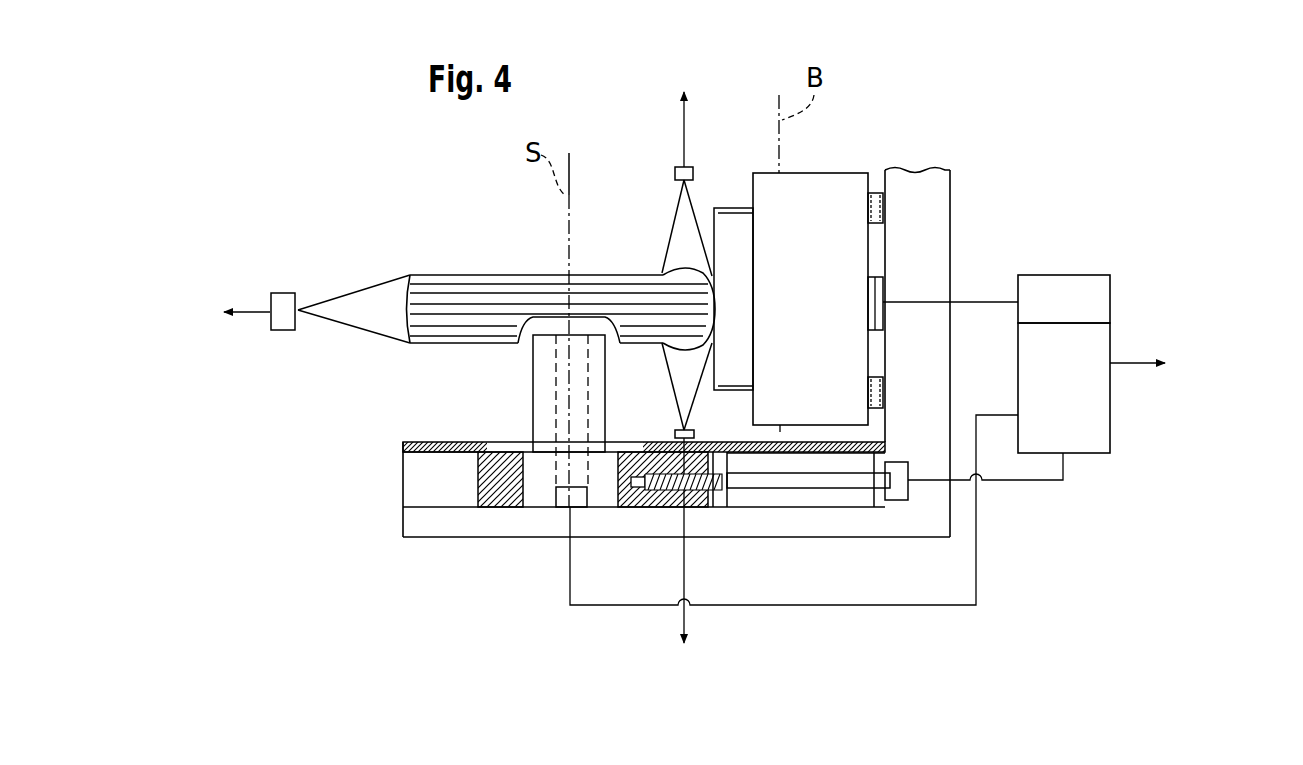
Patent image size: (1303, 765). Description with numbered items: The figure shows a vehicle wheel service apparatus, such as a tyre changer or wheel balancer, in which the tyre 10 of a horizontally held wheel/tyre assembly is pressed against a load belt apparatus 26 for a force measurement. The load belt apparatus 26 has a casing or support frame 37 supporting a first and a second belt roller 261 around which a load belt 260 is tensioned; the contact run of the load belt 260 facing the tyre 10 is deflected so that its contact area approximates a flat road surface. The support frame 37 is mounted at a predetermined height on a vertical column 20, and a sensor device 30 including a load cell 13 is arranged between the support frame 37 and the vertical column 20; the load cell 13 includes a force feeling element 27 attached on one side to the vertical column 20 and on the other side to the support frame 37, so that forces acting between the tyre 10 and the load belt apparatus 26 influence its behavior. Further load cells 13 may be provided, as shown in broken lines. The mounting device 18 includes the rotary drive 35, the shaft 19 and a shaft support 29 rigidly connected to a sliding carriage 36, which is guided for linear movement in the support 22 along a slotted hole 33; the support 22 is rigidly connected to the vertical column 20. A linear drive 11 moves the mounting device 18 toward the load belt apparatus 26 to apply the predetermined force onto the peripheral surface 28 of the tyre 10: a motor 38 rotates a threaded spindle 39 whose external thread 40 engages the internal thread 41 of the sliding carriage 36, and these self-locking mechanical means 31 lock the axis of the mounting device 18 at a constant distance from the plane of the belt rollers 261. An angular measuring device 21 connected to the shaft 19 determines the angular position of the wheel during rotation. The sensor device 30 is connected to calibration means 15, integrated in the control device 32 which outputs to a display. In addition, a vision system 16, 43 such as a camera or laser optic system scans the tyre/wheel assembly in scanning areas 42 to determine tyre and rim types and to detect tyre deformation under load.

The tyre 10 is at (445, 275).
The linear drive 11 is at (770, 504).
The load cell 13 is at (943, 261).
The sensor device 30 is at (943, 261).
The calibration means 15 is at (1077, 312).
The vision system 16 is at (675, 173).
The mounting device 18 is at (523, 372).
The shaft 19 is at (565, 327).
The vertical column 20 is at (940, 180).
The angular measuring device 21 is at (565, 500).
The support 22 is at (415, 525).
The load belt apparatus 26 is at (833, 88).
The force feeling element 27 is at (877, 292).
The peripheral surface 28 is at (400, 320).
The shaft support 29 is at (600, 378).
The self-locking mechanical means 31 is at (648, 497).
The control device 32 is at (1077, 395).
The slotted hole 33 is at (502, 443).
The rotary drive 35 is at (605, 497).
The sliding carriage 36 is at (498, 500).
The support frame 37 is at (828, 173).
The motor 38 is at (902, 497).
The threaded spindle 39 is at (818, 482).
The external thread 40 is at (718, 490).
The internal thread 41 is at (682, 492).
The scanning area 42 is at (378, 285).
The optical scanning device 43 is at (283, 293).
The load belt 260 is at (710, 212).
The belt roller 261 is at (730, 207).